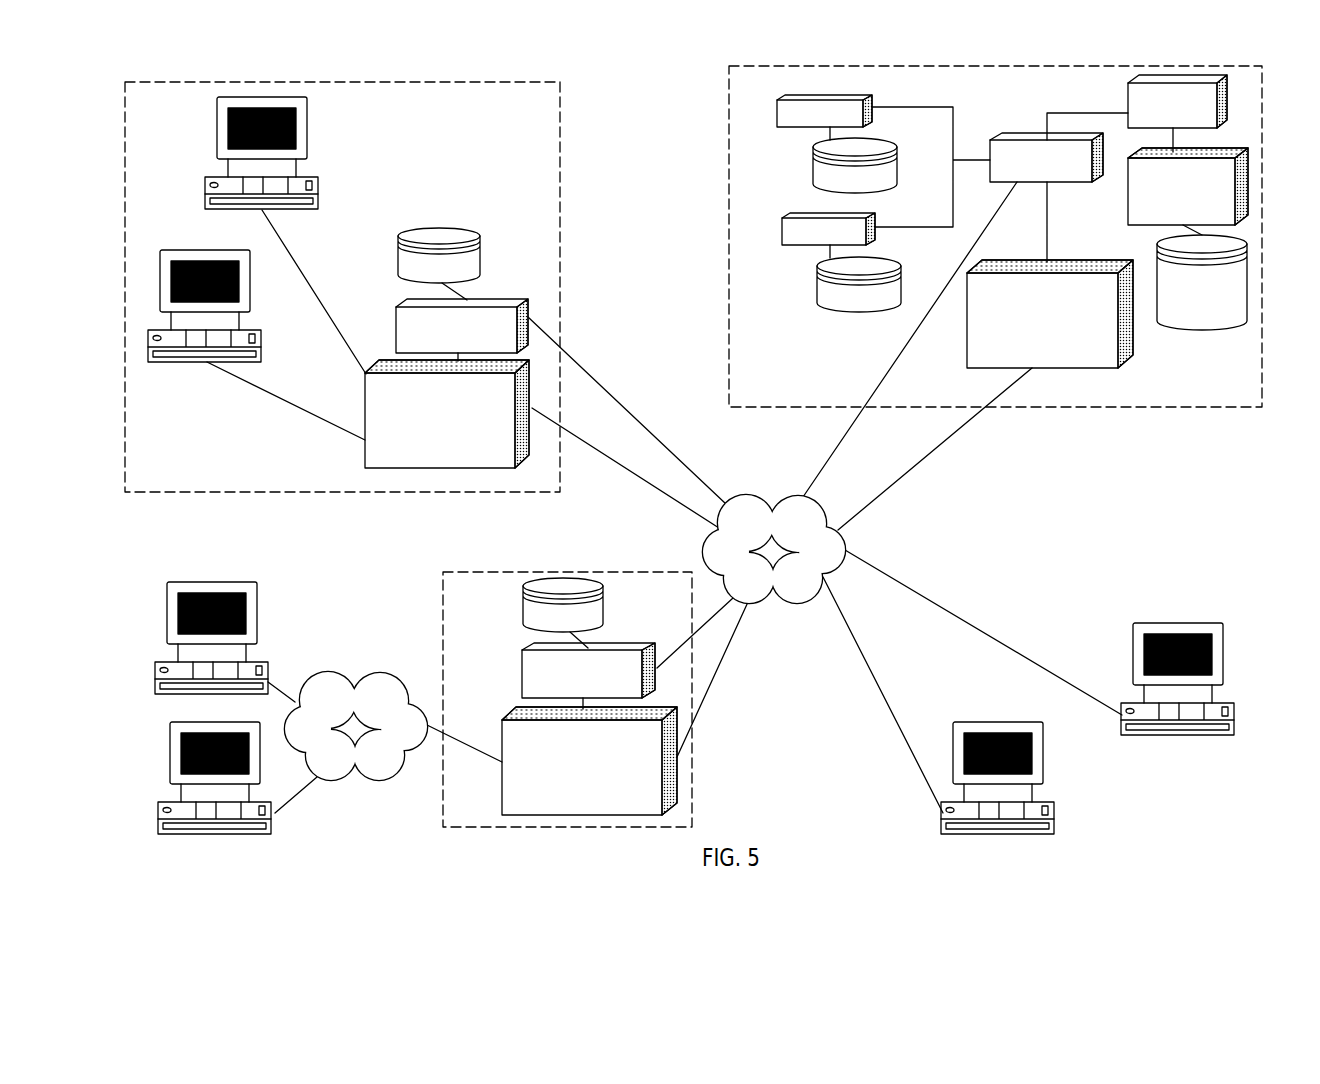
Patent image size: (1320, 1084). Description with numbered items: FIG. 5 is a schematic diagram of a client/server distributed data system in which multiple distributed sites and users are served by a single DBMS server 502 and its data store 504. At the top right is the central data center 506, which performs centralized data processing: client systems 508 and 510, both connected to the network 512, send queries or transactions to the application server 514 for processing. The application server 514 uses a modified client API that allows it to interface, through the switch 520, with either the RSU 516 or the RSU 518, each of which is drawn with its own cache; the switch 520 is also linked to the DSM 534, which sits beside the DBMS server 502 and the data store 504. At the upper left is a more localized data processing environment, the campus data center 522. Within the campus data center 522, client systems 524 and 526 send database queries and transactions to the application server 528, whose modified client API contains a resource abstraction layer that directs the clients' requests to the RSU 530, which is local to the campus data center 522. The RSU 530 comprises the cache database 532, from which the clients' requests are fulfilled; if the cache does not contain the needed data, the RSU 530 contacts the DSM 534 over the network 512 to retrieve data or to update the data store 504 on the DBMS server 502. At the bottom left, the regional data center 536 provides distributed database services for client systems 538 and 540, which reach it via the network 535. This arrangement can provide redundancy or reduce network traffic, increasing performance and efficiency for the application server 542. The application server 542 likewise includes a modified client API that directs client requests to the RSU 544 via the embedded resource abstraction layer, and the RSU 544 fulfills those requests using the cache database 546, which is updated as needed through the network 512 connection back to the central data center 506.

The DBMS server 502 is at (1127, 203).
The data store 504 is at (1207, 334).
The data center 506 is at (728, 97).
The client system 508 is at (1113, 645).
The client system 510 is at (1090, 802).
The network 512 is at (755, 497).
The application server 514 is at (961, 346).
The RSU 516 is at (768, 116).
The RSU 518 is at (776, 232).
The switch 520 is at (1018, 133).
The campus data center 522 is at (565, 178).
The client system 524 is at (207, 132).
The client system 526 is at (170, 243).
The application server 528 is at (353, 402).
The RSU 530 is at (395, 323).
The cache database 532 is at (398, 245).
The DSM 534 is at (1117, 104).
The network 535 is at (353, 670).
The regional data center 536 is at (430, 597).
The client system 538 is at (160, 597).
The client system 540 is at (163, 760).
The application server 542 is at (490, 720).
The RSU 544 is at (502, 673).
The cache database 546 is at (522, 592).